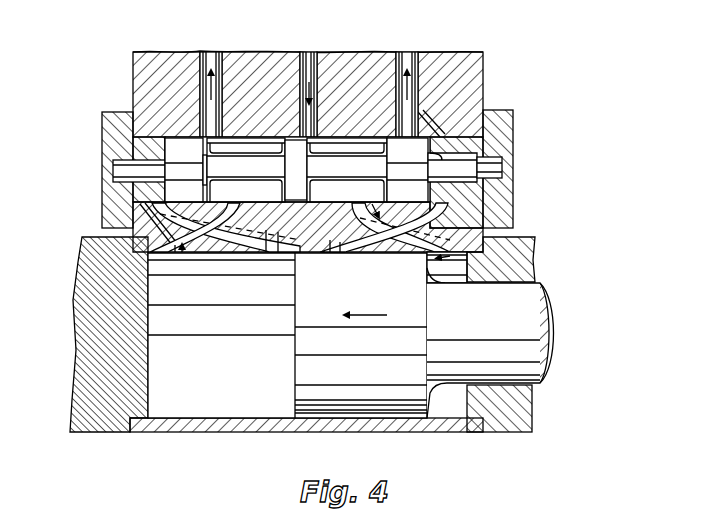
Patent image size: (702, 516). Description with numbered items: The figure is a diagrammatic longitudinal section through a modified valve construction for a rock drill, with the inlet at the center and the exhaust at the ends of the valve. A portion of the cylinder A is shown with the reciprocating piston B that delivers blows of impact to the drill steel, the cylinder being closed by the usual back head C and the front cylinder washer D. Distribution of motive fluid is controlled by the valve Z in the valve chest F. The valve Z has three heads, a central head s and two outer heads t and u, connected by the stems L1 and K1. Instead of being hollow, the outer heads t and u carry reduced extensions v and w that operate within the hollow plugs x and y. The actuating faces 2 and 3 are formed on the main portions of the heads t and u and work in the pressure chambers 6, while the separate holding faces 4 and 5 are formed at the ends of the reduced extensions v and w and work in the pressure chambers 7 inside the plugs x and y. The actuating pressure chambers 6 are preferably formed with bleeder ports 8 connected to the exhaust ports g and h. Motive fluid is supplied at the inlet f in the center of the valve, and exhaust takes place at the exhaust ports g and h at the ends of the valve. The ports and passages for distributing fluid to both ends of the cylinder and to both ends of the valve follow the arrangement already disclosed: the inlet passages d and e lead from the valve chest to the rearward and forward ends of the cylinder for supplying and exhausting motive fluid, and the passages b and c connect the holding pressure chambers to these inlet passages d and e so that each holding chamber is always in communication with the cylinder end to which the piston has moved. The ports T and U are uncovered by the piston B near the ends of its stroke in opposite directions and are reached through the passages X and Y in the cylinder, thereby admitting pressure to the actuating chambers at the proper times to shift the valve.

The bleeder ports 8 is at (190, 118).
The outer valve head t is at (172, 108).
The actuating face 2 is at (108, 112).
The actuating face 3 is at (493, 110).
The hollow plug x is at (187, 153).
The reduced extension v is at (132, 165).
The holding pressure chambers 7 is at (118, 162).
The holding face 4 is at (125, 178).
The actuating pressure chambers 6 is at (145, 205).
The passage b is at (133, 240).
The inlet passage d is at (203, 252).
The cylinder passage Y is at (240, 245).
The port T is at (278, 248).
The port U is at (343, 252).
The cylinder passage X is at (372, 222).
The inlet passage e is at (423, 233).
The passage c is at (530, 247).
The hollow plug y is at (503, 212).
The reduced extension w is at (497, 184).
The holding face 5 is at (503, 167).
The valve chest F is at (444, 76).
The exhaust port h is at (414, 68).
The outer valve head u is at (395, 138).
The stem L1 is at (343, 155).
The inlet f is at (315, 135).
The central valve head s is at (301, 135).
The valve Z is at (252, 165).
The stem K1 is at (236, 150).
The exhaust port g is at (212, 62).
The back head C is at (108, 425).
The piston B is at (300, 400).
The cylinder A is at (435, 428).
The front cylinder washer D is at (515, 425).